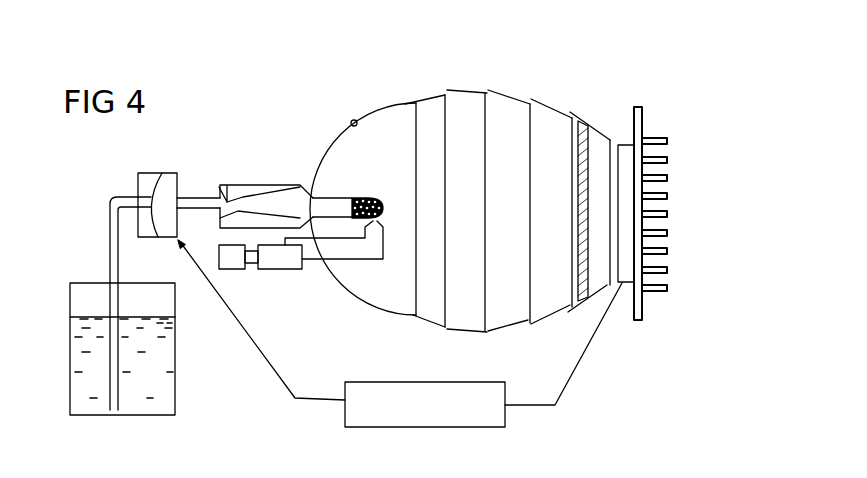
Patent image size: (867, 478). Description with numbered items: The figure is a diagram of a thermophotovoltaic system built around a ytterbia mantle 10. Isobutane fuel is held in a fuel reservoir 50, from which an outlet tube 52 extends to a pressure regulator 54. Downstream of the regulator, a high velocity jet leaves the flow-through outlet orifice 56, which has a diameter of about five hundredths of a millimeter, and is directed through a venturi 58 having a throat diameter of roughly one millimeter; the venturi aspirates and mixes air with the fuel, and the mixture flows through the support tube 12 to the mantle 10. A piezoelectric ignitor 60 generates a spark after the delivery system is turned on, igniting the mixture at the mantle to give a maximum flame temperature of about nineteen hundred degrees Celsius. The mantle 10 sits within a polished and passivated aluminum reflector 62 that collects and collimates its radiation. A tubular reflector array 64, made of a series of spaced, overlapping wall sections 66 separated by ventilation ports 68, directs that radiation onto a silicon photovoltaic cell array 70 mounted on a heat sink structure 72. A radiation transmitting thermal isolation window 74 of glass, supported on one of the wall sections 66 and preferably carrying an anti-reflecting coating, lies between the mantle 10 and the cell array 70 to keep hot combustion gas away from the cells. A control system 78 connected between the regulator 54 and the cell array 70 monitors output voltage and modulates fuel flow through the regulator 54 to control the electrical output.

The ytterbia mantle 10 is at (387, 202).
The support tube 12 is at (328, 197).
The fuel reservoir 50 is at (70, 333).
The outlet tube 52 is at (107, 237).
The pressure regulator 54 is at (153, 173).
The flow-through outlet orifice 56 is at (232, 185).
The venturi 58 is at (263, 180).
The piezoelectric ignitor 60 is at (288, 271).
The aluminum reflector 62 is at (363, 118).
The tubular reflector array 64 is at (491, 83).
The wall sections 66 is at (513, 93).
The ventilation ports 68 is at (405, 98).
The silicon photovoltaic cell array 70 is at (616, 136).
The heat sink structure 72 is at (645, 118).
The thermal isolation window 74 is at (578, 190).
The control system 78 is at (422, 382).